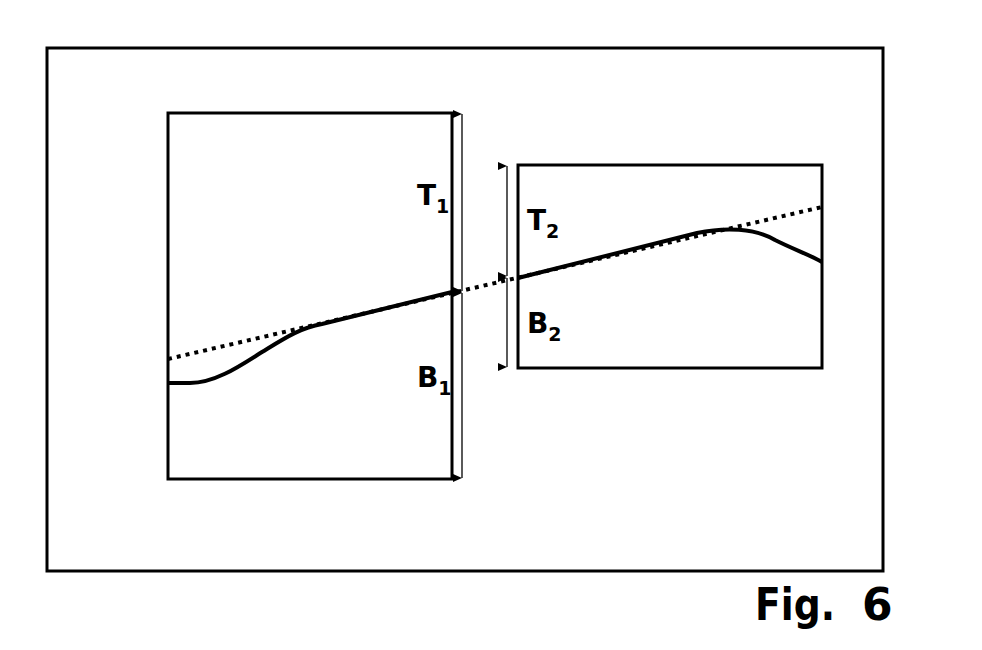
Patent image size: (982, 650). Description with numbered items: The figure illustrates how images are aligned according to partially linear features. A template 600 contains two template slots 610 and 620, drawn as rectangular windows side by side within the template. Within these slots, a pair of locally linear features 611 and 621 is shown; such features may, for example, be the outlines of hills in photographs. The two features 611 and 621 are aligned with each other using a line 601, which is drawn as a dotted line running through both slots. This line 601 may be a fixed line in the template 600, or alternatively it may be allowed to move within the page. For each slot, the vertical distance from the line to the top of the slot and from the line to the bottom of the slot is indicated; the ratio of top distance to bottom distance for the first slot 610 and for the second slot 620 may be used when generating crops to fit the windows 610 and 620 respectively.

The template 600 is at (473, 47).
The template slot 610 is at (301, 111).
The template slot 620 is at (664, 163).
The line 601 is at (478, 281).
The locally linear feature 611 is at (260, 355).
The locally linear feature 621 is at (773, 236).